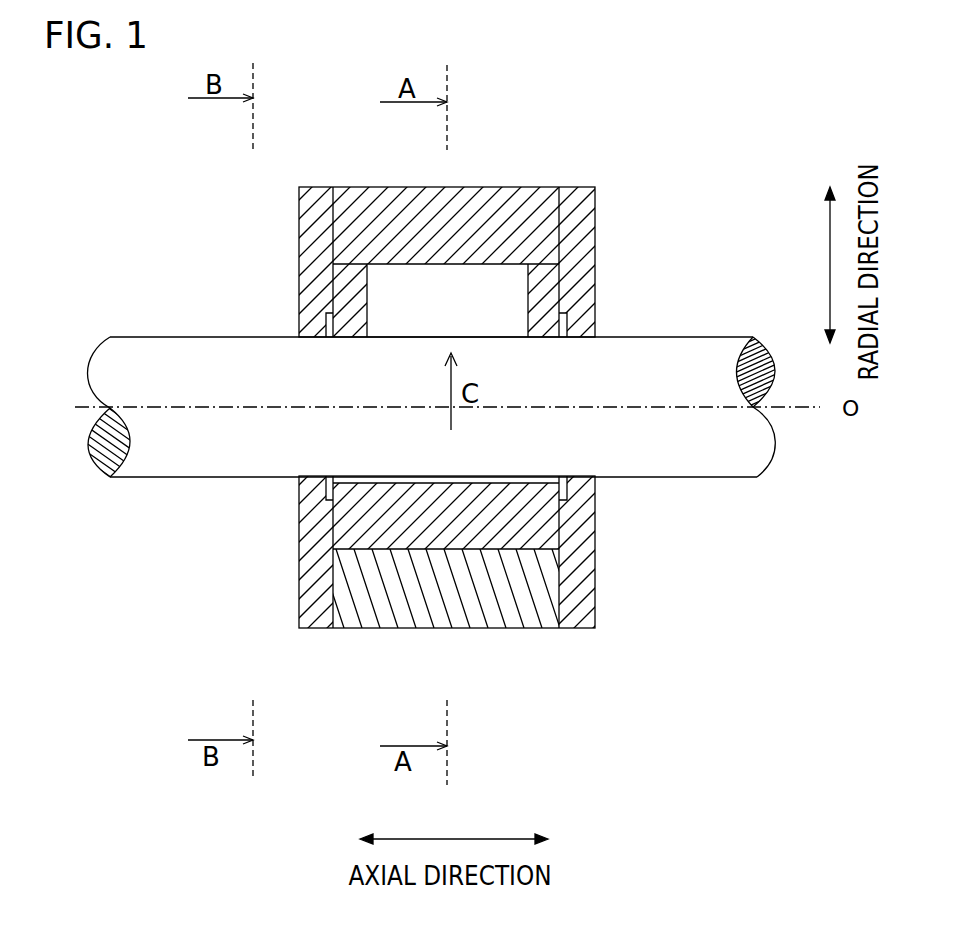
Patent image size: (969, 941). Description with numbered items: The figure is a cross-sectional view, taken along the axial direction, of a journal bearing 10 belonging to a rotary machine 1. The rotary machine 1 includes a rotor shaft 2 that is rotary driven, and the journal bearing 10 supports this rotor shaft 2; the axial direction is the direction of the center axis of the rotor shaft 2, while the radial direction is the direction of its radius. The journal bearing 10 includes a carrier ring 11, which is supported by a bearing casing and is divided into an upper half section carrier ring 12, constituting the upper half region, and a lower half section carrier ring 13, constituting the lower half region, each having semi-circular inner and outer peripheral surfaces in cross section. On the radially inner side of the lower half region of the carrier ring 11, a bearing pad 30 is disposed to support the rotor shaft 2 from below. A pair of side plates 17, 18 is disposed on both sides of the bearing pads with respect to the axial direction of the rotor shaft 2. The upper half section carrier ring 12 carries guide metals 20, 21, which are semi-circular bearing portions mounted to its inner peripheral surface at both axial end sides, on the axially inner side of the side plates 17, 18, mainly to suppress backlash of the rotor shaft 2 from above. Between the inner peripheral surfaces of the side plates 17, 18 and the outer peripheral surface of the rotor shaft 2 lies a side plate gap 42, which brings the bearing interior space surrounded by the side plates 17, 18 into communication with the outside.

The rotary machine 1 is at (676, 61).
The rotor shaft 2 is at (722, 336).
The journal bearing 10 is at (643, 227).
The carrier ring 11 is at (484, 438).
The upper half section carrier ring 12 is at (343, 226).
The lower half section carrier ring 13 is at (450, 607).
The side plate 17 is at (305, 277).
The side plate 18 is at (587, 275).
The guide metal 20 is at (365, 315).
The guide metal 21 is at (530, 315).
The bearing pad 30 is at (585, 517).
The side plate gap 42 is at (575, 327).